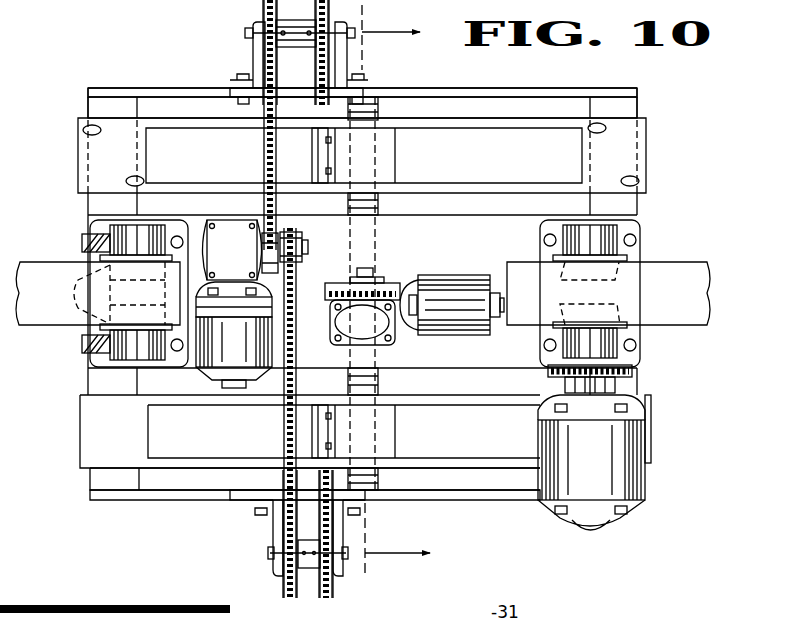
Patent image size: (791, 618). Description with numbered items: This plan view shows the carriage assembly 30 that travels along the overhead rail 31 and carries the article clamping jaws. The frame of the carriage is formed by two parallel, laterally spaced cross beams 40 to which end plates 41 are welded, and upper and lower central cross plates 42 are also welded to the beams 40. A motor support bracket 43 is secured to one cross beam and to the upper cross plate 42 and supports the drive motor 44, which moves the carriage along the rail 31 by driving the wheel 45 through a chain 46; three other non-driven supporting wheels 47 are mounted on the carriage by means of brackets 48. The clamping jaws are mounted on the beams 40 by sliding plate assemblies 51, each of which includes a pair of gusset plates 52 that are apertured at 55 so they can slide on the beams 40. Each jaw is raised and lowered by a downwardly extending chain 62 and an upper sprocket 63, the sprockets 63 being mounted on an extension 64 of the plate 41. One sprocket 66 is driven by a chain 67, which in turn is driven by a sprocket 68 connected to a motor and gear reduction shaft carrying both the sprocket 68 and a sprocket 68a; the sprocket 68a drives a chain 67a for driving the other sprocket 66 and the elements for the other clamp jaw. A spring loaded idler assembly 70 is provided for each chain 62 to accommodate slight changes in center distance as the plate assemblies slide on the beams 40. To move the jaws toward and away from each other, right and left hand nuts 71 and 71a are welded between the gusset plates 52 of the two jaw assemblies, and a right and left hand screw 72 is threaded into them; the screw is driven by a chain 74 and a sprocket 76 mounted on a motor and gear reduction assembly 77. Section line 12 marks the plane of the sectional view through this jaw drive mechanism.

The section line 12 is at (396, 293).
The carriage assembly 30 is at (163, 88).
The overhead rail 31 is at (30, 304).
The cross beams 40 is at (98, 108).
The end plates 41 is at (425, 88).
The central cross plates 42 is at (447, 241).
The motor support bracket 43 is at (625, 397).
The drive motor 44 is at (625, 483).
The wheel 45 is at (618, 304).
The chain 46 is at (622, 368).
The supporting wheels 47 is at (648, 273).
The brackets 48 is at (148, 238).
The sliding plate assemblies 51 is at (488, 118).
The gusset plates 52 is at (455, 125).
The apertures 55 is at (83, 131).
The chain 62 is at (318, 60).
The upper sprocket 63 is at (340, 33).
The extension of plate 64 is at (238, 92).
The sprocket 66 is at (260, 45).
The chain 67 is at (265, 146).
The chain 67a is at (298, 308).
The sprocket 68 is at (273, 236).
The sprocket 68a is at (292, 241).
The spring loaded idler assembly 70 is at (305, 158).
The right hand nut 71 is at (386, 154).
The left hand nut 71a is at (388, 440).
The right and left hand screw 72 is at (380, 205).
The chain 74 is at (388, 283).
The sprocket 76 is at (368, 280).
The motor and gear reduction assembly 77 is at (453, 298).